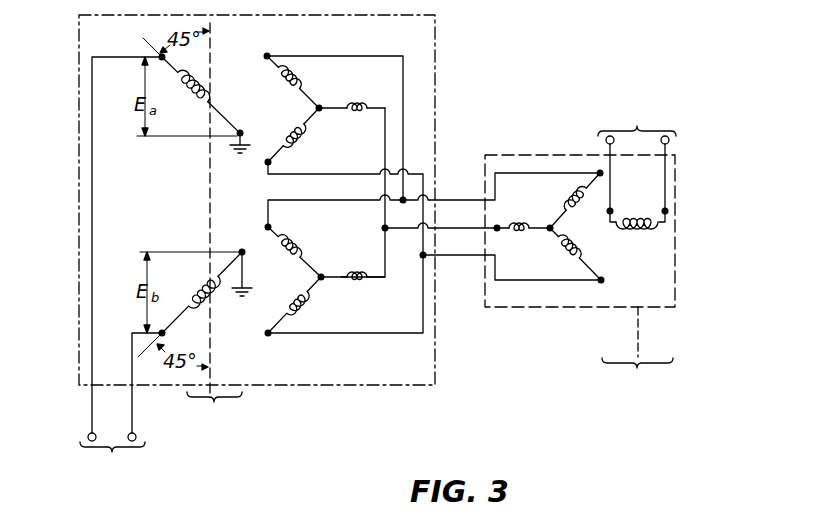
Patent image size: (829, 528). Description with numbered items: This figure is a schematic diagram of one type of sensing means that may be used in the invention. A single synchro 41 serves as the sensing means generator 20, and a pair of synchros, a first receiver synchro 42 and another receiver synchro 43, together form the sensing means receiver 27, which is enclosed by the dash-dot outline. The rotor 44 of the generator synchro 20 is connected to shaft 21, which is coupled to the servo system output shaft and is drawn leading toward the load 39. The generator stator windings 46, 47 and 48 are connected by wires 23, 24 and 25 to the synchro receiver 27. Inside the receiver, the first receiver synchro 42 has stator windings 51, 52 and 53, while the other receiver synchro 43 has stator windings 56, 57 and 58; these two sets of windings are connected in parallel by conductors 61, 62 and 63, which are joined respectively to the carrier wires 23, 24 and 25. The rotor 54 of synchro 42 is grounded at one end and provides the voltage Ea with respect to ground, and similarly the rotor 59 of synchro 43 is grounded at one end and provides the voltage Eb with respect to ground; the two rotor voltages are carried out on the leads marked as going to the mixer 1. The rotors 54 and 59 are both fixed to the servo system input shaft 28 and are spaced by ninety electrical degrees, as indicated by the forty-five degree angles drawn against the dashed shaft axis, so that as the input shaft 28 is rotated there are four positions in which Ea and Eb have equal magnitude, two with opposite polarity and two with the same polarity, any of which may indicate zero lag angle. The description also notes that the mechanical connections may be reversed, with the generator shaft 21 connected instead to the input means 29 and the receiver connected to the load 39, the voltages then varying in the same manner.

The mixer 1 is at (122, 455).
The sensing means generator 20 is at (497, 150).
The shaft 21 is at (637, 333).
The wire 23 is at (455, 199).
The wire 24 is at (456, 228).
The wire 25 is at (463, 258).
The sensing means receiver 27 is at (437, 68).
The servo system input shaft 28 is at (214, 345).
The input means 29 is at (262, 410).
The load 39 is at (628, 387).
The synchro 41 is at (619, 259).
The first receiver synchro 42 is at (272, 112).
The receiver synchro 43 is at (284, 285).
The rotor 44 is at (630, 207).
The stator winding 46 is at (577, 197).
The stator winding 47 is at (530, 223).
The stator winding 48 is at (565, 250).
The stator winding 51 is at (294, 143).
The stator winding 52 is at (353, 112).
The stator winding 53 is at (296, 76).
The rotor 54 is at (204, 84).
The stator winding 56 is at (292, 242).
The stator winding 57 is at (345, 270).
The stator winding 58 is at (301, 307).
The rotor 59 is at (192, 290).
The conductor 61 is at (402, 72).
The conductor 62 is at (385, 213).
The conductor 63 is at (422, 283).